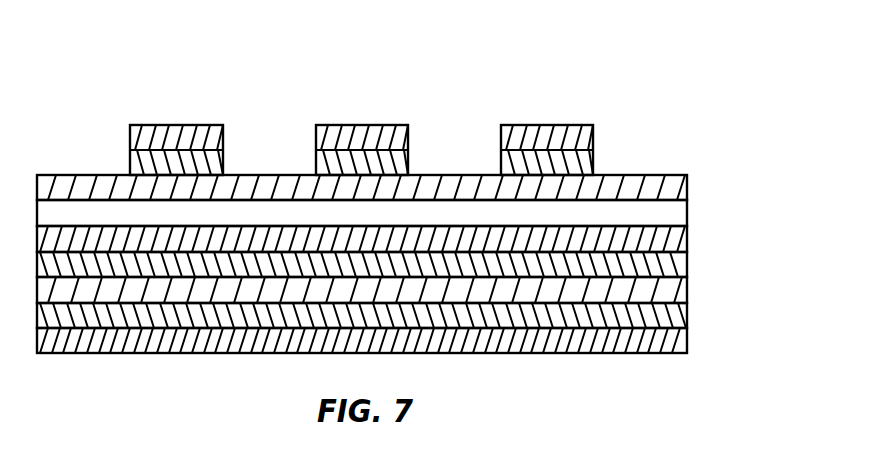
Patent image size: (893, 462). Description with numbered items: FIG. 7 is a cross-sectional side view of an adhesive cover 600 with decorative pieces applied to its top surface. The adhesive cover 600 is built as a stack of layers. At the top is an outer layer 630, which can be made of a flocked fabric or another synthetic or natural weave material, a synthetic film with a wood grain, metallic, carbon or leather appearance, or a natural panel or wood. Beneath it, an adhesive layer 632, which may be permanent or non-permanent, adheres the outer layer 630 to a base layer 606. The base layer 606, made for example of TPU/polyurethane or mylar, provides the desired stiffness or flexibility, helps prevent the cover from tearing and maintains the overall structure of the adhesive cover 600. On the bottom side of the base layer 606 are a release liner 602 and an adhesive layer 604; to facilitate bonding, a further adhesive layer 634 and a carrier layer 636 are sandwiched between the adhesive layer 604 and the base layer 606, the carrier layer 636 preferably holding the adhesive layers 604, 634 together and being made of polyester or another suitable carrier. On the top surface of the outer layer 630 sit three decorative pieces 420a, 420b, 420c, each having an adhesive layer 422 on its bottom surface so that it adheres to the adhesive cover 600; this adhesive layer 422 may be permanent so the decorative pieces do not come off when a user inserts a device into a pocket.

The adhesive cover 600 is at (503, 66).
The decorative piece 420a is at (177, 125).
The decorative piece 420b is at (362, 125).
The decorative piece 420c is at (590, 131).
The adhesive layer 422 is at (593, 163).
The outer layer 630 is at (687, 190).
The adhesive layer 632 is at (687, 212).
The base layer 606 is at (687, 238).
The adhesive layer 634 is at (687, 265).
The carrier layer 636 is at (687, 292).
The adhesive layer 604 is at (687, 317).
The release liner 602 is at (687, 340).